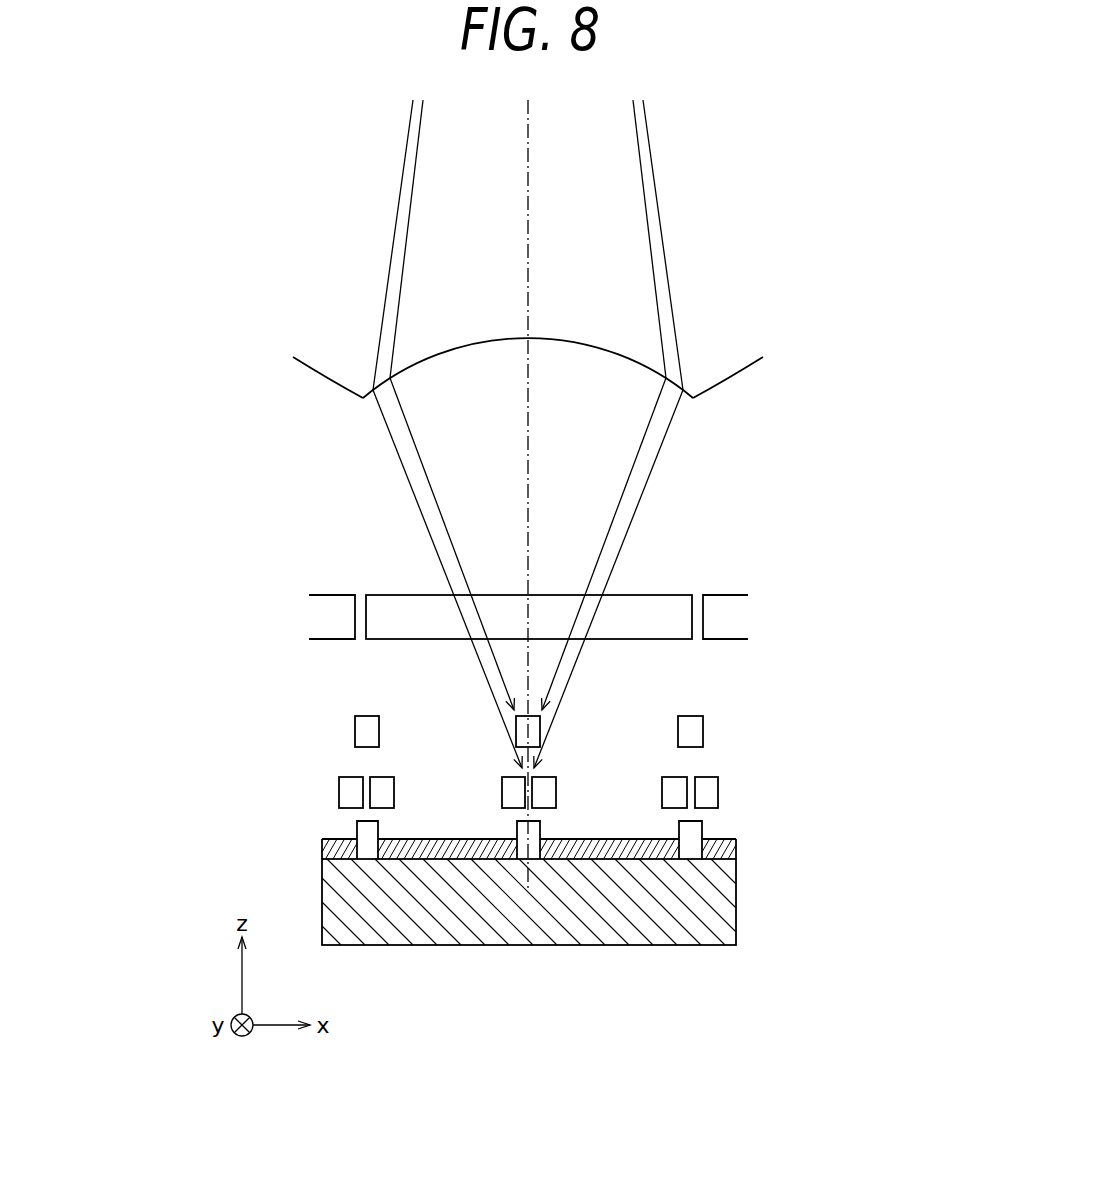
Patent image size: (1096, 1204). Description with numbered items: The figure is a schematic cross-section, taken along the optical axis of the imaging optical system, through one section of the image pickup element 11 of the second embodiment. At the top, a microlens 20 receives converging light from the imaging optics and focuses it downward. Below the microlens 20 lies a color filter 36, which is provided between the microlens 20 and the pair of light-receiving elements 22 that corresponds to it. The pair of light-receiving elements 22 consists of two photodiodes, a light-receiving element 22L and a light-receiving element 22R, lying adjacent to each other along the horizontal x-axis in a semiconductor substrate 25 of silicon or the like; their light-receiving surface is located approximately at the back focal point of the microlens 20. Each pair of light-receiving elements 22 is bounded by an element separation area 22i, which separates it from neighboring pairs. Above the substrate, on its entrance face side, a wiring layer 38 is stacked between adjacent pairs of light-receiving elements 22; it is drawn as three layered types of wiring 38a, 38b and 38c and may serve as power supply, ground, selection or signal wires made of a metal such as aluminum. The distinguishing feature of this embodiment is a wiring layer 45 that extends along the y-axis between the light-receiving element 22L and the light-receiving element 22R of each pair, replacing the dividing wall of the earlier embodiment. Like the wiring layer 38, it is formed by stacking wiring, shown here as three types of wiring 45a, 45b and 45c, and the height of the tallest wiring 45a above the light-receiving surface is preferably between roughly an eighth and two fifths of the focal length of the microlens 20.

The image pickup element 11 is at (745, 510).
The microlens 20 is at (563, 340).
The color filter 36 is at (415, 595).
The wiring layer 38 is at (309, 746).
The wiring 38a is at (353, 719).
The wiring 38b is at (378, 777).
The wiring 38c is at (313, 778).
The wiring layer 45 is at (479, 746).
The wiring 45a is at (516, 722).
The wiring 45b is at (538, 787).
The wiring 45c is at (482, 778).
The pair of light-receiving elements 22 is at (529, 934).
The light-receiving element 22R is at (455, 853).
The light-receiving element 22L is at (603, 853).
The element separation area 22i is at (360, 830).
The semiconductor substrate 25 is at (678, 902).